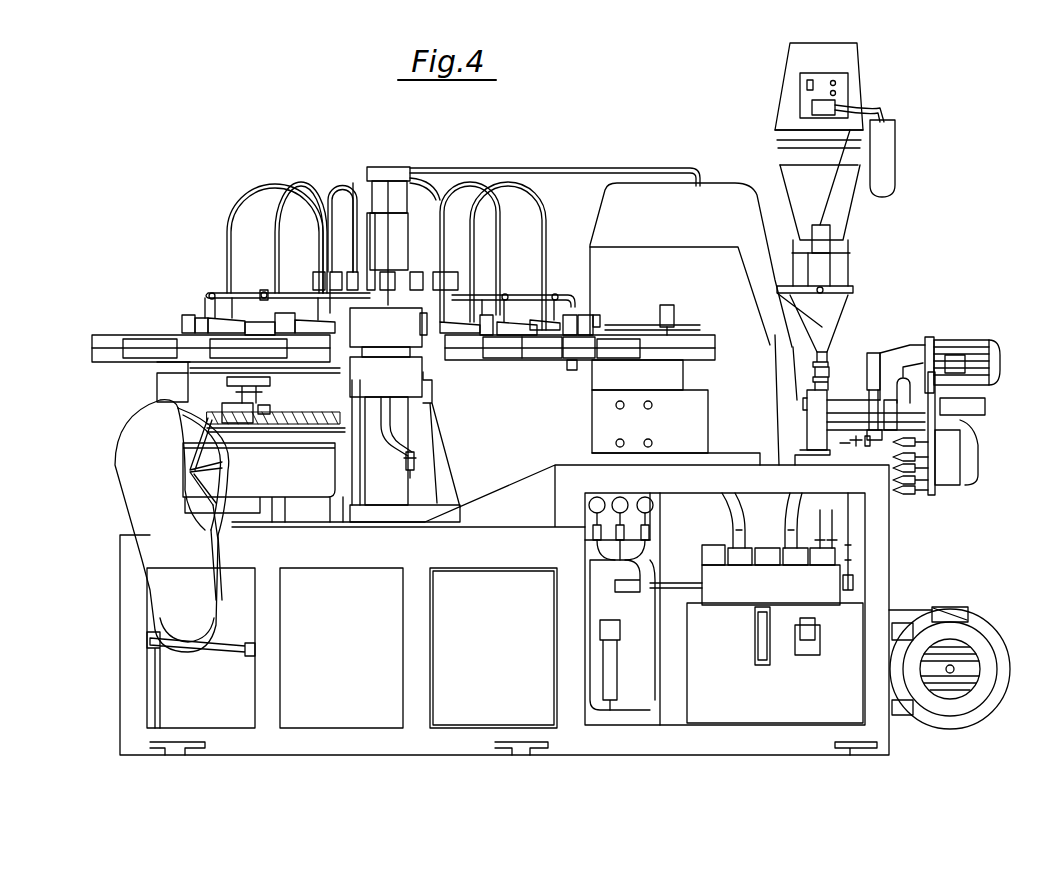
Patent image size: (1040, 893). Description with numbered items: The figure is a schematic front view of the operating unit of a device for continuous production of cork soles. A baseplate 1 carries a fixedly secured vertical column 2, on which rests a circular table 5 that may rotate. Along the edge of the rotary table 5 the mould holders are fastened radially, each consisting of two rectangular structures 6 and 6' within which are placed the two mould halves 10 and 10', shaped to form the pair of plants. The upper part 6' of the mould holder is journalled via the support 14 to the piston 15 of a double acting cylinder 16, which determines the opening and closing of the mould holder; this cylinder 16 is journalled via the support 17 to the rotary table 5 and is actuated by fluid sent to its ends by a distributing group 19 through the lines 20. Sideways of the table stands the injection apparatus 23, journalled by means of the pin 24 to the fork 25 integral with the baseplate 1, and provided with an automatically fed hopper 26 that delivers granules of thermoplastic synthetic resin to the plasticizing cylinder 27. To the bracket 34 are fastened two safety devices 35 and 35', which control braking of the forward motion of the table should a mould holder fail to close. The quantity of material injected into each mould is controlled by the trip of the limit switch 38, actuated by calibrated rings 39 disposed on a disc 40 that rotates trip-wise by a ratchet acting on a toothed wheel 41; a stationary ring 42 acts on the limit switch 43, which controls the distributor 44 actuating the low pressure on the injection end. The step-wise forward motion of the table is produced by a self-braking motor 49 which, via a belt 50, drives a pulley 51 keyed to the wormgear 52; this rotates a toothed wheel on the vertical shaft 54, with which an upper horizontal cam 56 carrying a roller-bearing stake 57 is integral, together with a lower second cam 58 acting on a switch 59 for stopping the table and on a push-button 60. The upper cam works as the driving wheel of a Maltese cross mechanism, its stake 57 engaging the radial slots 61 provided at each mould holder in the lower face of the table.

The baseplate 1 is at (340, 745).
The vertical column 2 is at (390, 500).
The table 5 is at (446, 366).
The rectangular structure 6 is at (580, 394).
The rectangular structure 6' is at (578, 381).
The mould half 10 is at (386, 372).
The mould half 10' is at (386, 327).
The support 14 is at (458, 328).
The piston 15 is at (217, 323).
The double acting cylinder 16 is at (258, 327).
The support 17 is at (335, 290).
The distributing group 19 is at (396, 190).
The line 20 is at (236, 210).
The injection apparatus 23 is at (912, 350).
The pin 24 is at (820, 402).
The fork 25 is at (812, 442).
The hopper 26 is at (840, 277).
The plasticizing cylinder 27 is at (797, 417).
The bracket 34 is at (727, 192).
The safety device 35 is at (637, 345).
The safety device 35' is at (682, 323).
The limit switch 38 is at (886, 402).
The ring 39 is at (905, 500).
The disc 40 is at (934, 490).
The toothed wheel 41 is at (946, 472).
The stationary ring 42 is at (862, 446).
The limit switch 43 is at (873, 355).
The distributor 44 is at (782, 560).
The self-breaking motor 49 is at (215, 622).
The belt 50 is at (218, 505).
The pulley 51 is at (228, 462).
The wormgear 52 is at (178, 450).
The vertical shaft 54 is at (195, 420).
The upper horizontal cam 56 is at (175, 398).
The stake 57 is at (238, 385).
The second cam 58 is at (272, 420).
The switch 59 is at (408, 457).
The push-button 60 is at (372, 473).
The radial slot 61 is at (248, 360).